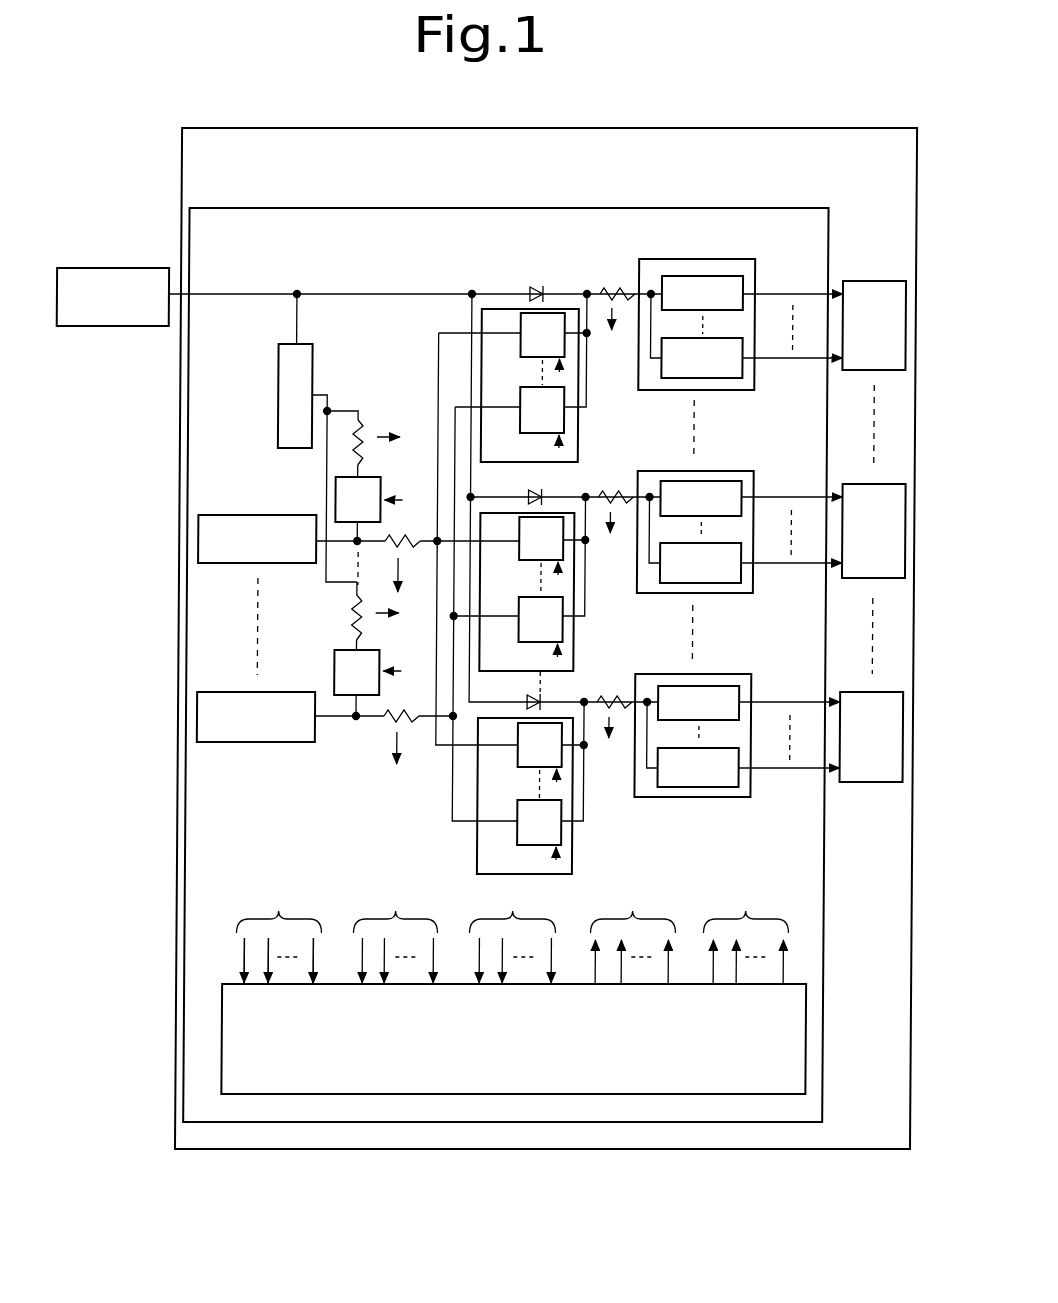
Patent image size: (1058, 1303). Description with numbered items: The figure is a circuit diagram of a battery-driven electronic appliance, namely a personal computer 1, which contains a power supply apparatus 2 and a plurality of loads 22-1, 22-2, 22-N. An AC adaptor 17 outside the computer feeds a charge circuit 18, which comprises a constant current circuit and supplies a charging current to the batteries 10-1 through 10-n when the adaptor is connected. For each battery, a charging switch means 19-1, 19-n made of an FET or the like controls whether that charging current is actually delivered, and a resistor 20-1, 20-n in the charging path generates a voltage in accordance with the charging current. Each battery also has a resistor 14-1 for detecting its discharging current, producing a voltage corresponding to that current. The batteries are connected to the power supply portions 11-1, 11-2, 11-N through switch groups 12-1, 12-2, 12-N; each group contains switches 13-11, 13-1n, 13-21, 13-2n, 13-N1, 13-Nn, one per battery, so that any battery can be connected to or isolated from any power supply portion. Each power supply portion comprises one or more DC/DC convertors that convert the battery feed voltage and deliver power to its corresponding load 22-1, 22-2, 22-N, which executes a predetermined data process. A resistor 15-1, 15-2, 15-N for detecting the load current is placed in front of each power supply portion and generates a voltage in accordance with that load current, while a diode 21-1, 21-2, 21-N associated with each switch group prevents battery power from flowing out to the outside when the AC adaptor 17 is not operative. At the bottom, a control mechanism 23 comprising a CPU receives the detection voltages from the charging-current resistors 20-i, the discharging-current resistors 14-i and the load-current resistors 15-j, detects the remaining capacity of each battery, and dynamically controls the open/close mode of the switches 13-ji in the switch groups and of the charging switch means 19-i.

The personal computer 1 is at (381, 128).
The power supply apparatus 2 is at (690, 208).
The AC adaptor 17 is at (134, 268).
The charge circuit 18 is at (315, 357).
The battery 10-1 is at (254, 515).
The battery 10-n is at (262, 742).
The resistor for detecting the charging current 20-1 is at (395, 418).
The resistor for detecting the charging current 20-n is at (370, 602).
The charging switch means 19-1 is at (370, 477).
The charging switch means 19-n is at (369, 650).
The resistor for detecting a discharging current 14-1 is at (401, 541).
The diode 21-1 is at (537, 288).
The diode 21-2 is at (537, 494).
The diode 21-N is at (537, 700).
The resistor for detecting a load current 15-1 is at (614, 285).
The resistor for detecting a load current 15-2 is at (618, 493).
The resistor for detecting a load current 15-N is at (618, 696).
The power supply portion 11-1 is at (702, 250).
The power supply portion 11-2 is at (703, 459).
The power supply portion 11-N is at (710, 674).
The load 22-1 is at (872, 281).
The load 22-2 is at (876, 484).
The load 22-N is at (873, 782).
The switch group 12-1 is at (579, 440).
The switch group 12-2 is at (578, 641).
The switch group 12-N is at (579, 849).
The switch 13-11 is at (521, 357).
The switch 13-1n is at (521, 434).
The switch 13-21 is at (541, 560).
The switch 13-2n is at (549, 642).
The switch 13-N1 is at (521, 768).
The switch 13-Nn is at (521, 845).
The control mechanism 23 is at (229, 1059).
The resistor for detecting the charging current 20-i is at (279, 933).
The resistor for detecting a discharging current 14-i is at (395, 933).
The resistor for detecting a load current 15-j is at (512, 933).
The charging switch means 19-i is at (633, 933).
The switch 13-ji is at (746, 933).